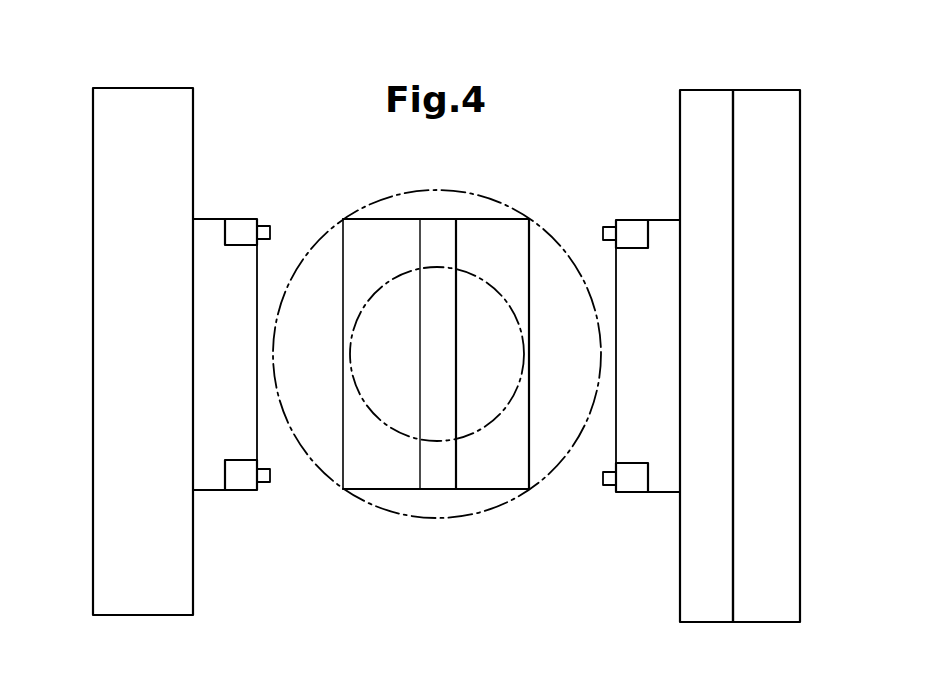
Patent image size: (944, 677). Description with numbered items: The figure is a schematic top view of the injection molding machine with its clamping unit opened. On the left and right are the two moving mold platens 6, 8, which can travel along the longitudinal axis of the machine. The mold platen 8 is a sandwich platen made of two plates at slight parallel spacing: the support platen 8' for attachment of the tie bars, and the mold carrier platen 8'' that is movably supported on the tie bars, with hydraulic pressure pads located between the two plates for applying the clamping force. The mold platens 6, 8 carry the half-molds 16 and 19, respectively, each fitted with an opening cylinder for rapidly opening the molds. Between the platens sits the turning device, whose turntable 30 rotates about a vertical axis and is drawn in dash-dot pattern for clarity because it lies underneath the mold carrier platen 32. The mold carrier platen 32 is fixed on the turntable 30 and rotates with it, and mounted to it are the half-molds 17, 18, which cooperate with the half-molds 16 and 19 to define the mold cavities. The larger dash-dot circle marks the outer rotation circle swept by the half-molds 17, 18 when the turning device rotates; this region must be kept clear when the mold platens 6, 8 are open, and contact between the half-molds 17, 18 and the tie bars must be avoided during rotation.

The mold platen 6 is at (141, 110).
The mold platen 8 is at (747, 323).
The support platen 8' is at (773, 336).
The mold carrier platen 8'' is at (706, 335).
The half-mold 16 is at (212, 235).
The half-mold 17 is at (363, 234).
The half-mold 18 is at (515, 236).
The half-mold 19 is at (660, 232).
The turntable 30 is at (484, 418).
The mold carrier platen 32 is at (433, 478).